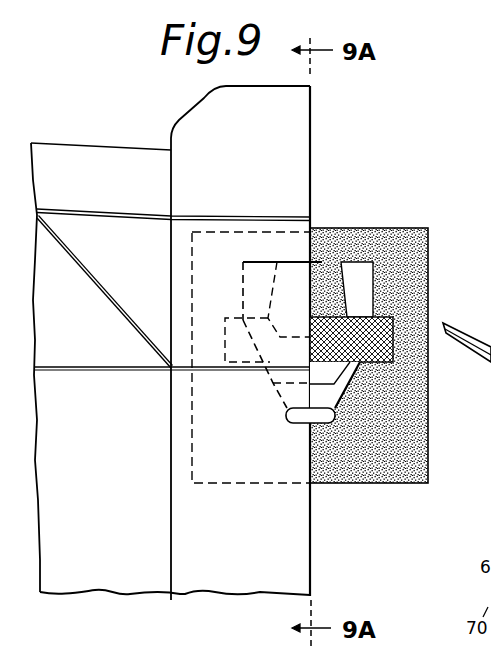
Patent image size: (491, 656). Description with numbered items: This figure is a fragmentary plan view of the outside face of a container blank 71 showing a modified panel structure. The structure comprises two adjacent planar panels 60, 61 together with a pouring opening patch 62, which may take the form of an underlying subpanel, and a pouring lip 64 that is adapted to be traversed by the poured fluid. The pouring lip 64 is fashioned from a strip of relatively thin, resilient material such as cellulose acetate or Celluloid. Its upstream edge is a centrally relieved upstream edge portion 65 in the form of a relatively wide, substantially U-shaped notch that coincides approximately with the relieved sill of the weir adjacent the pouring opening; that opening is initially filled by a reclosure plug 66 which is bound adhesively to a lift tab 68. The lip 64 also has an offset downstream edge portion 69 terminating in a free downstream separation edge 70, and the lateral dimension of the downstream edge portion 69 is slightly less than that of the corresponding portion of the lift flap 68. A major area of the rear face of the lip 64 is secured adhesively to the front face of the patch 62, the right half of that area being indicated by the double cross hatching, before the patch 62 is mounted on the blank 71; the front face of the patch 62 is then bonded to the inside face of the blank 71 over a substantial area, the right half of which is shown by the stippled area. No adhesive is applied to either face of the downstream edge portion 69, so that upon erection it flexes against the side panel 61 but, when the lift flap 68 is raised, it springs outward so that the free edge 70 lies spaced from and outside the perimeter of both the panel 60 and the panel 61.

The planar panel 60 is at (181, 277).
The side panel 61 is at (183, 450).
The pouring opening patch 62 is at (430, 243).
The pouring lip 64 is at (328, 340).
The centrally relieved upstream edge portion 65 is at (316, 331).
The reclosure plug 66 is at (336, 292).
The lift tab 68 is at (298, 390).
The offset downstream edge portion 69 is at (318, 368).
The free downstream separation edge 70 is at (325, 386).
The container blank 71 is at (208, 594).